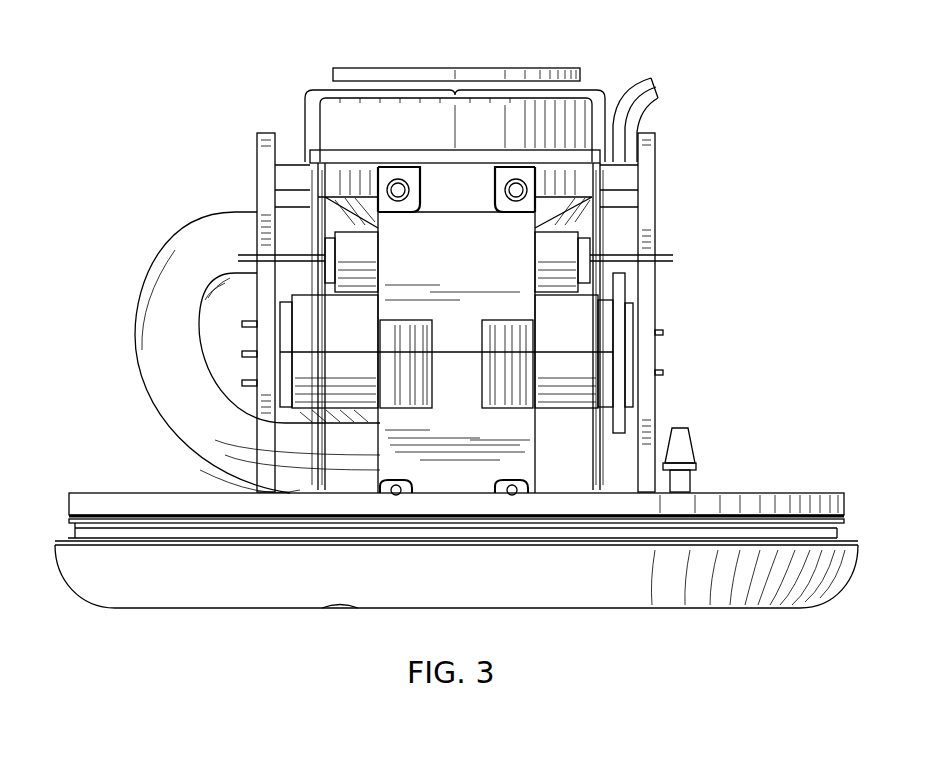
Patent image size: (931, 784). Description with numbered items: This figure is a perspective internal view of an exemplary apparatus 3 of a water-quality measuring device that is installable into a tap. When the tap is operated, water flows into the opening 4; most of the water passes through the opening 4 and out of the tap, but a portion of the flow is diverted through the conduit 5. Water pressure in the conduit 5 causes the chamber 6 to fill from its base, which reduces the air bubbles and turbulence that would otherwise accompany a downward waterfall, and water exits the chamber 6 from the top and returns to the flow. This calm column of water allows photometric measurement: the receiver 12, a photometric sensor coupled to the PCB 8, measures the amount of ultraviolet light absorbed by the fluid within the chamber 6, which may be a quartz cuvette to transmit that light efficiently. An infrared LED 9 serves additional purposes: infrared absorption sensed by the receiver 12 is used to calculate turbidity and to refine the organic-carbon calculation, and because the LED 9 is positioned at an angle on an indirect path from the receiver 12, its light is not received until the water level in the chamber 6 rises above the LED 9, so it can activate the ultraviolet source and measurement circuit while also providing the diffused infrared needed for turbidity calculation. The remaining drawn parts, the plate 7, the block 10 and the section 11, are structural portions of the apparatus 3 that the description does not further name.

The apparatus 3 is at (177, 72).
The opening 4 is at (533, 52).
The conduit 5 is at (166, 257).
The chamber 6 is at (462, 218).
The right end plate 7 is at (657, 303).
The PCB 8 is at (258, 163).
The IR LED 9 is at (565, 246).
The left bearing block 10 is at (357, 248).
The right rotor section 11 is at (575, 365).
The receiver 12 is at (342, 365).